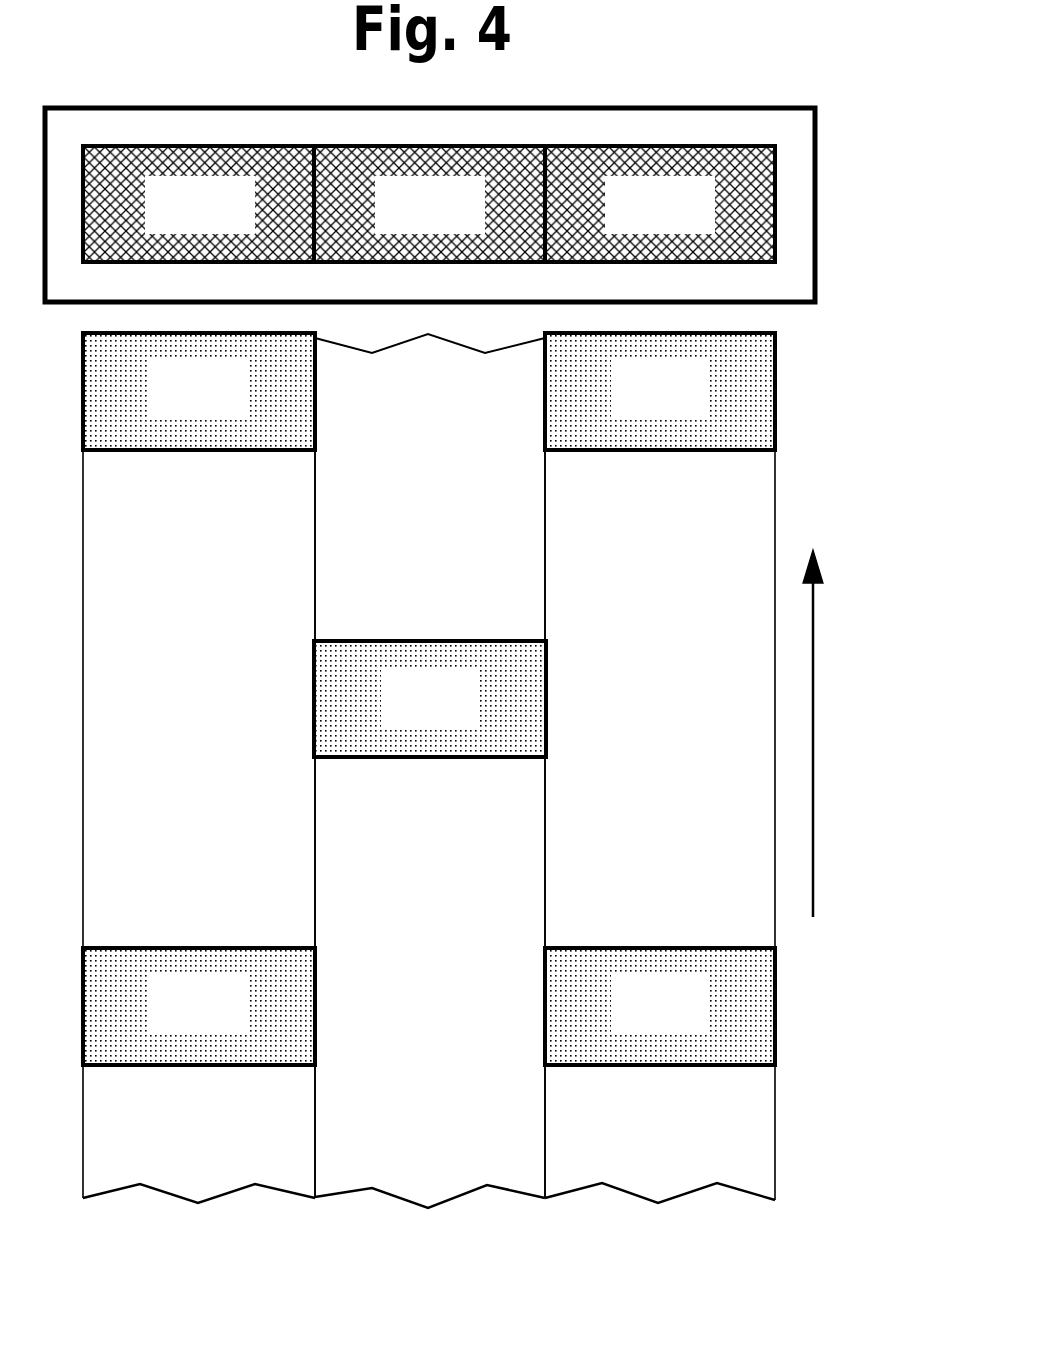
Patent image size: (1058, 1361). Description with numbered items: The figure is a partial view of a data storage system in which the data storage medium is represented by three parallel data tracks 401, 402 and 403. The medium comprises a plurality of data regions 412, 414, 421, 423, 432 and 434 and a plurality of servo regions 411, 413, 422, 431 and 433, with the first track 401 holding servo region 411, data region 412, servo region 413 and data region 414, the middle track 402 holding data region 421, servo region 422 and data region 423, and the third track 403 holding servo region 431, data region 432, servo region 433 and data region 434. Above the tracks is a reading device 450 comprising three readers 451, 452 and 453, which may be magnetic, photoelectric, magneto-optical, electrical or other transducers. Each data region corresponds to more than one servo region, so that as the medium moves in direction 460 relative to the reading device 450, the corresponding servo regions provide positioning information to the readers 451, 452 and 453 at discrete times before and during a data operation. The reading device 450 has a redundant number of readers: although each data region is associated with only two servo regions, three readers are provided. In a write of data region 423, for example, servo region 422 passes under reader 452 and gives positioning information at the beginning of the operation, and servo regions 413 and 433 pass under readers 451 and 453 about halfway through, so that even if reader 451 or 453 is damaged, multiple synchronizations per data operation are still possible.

The reading device 450 is at (815, 108).
The reader 451 is at (198, 204).
The reader 452 is at (429, 204).
The reader 453 is at (660, 204).
The data track 401 is at (199, 823).
The data track 402 is at (430, 823).
The data track 403 is at (660, 823).
The servo region 411 is at (199, 391).
The data region 412 is at (199, 699).
The servo region 413 is at (199, 1006).
The data region 414 is at (199, 1134).
The data region 421 is at (430, 487).
The servo region 422 is at (430, 699).
The data region 423 is at (430, 982).
The servo region 431 is at (660, 391).
The data region 432 is at (660, 699).
The servo region 433 is at (660, 1006).
The data region 434 is at (660, 1134).
The direction 460 is at (813, 778).